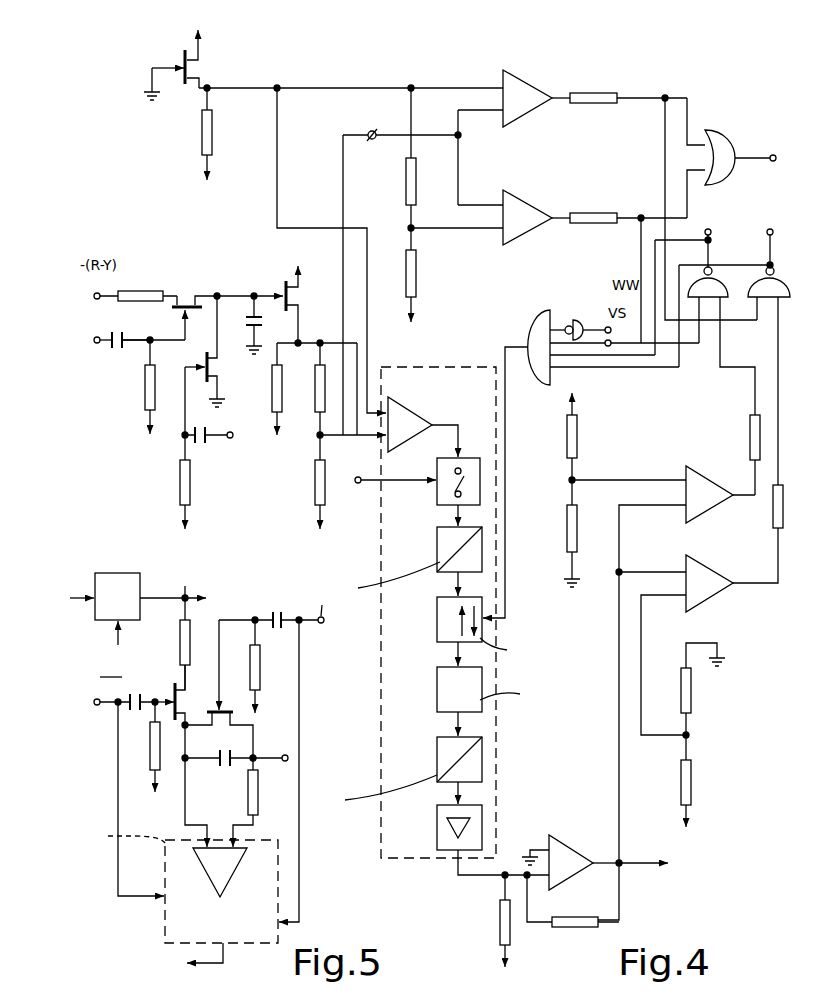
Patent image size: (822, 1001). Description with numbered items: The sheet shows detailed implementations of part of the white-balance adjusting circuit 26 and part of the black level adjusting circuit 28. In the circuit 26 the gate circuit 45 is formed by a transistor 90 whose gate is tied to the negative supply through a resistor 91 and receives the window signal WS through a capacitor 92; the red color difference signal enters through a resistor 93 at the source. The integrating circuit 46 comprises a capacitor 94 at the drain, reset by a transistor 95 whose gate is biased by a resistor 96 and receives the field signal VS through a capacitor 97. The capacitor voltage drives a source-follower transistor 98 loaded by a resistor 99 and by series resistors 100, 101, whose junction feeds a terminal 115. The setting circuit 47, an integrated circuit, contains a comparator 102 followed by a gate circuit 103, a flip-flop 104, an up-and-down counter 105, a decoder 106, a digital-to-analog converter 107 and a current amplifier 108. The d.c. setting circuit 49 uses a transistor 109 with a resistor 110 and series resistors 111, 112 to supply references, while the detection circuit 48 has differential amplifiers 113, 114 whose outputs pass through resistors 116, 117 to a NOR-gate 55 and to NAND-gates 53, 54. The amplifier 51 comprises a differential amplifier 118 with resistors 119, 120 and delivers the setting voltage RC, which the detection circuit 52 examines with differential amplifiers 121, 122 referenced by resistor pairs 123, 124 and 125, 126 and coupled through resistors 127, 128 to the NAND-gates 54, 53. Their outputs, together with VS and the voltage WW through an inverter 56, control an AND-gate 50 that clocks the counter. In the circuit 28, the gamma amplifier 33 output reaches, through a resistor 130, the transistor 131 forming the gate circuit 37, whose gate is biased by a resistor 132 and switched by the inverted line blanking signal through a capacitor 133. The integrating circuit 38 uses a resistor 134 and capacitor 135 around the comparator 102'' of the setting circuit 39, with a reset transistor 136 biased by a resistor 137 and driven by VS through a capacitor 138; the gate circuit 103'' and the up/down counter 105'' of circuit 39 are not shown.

In FIG. 4, the white-balance adjusting circuit 26 is at (575, 755).
In FIG. 4, the automatic black level adjusting circuit 28 is at (710, 867).
In FIG. 5, the gamma amplifier 33 is at (128, 572).
In FIG. 5, the gate circuit 37 is at (166, 671).
In FIG. 5, the integrating circuit 38 is at (234, 809).
In FIG. 5, the setting circuit 39 is at (165, 876).
In FIG. 4, the gate circuit 45 is at (157, 334).
In FIG. 4, the integrating circuit 46 is at (263, 380).
In FIG. 4, the setting circuit 47 is at (450, 366).
In FIG. 4, the detection circuit 48 is at (589, 150).
In FIG. 4, the d.c. setting circuit 49 is at (299, 175).
In FIG. 4, the AND-gate 50 is at (531, 311).
In FIG. 4, the amplifier 51 is at (583, 955).
In FIG. 4, the detection circuit 52 is at (636, 625).
In FIG. 4, the NAND-gate 53 is at (765, 266).
In FIG. 4, the NAND-gate 54 is at (701, 266).
In FIG. 4, the NOR-gate 55 is at (722, 137).
In FIG. 4, the inverter 56 is at (577, 318).
In FIG. 4, the transistor 90 is at (184, 303).
In FIG. 4, the resistor 91 is at (145, 395).
In FIG. 4, the capacitor 92 is at (132, 349).
In FIG. 4, the resistor 93 is at (117, 303).
In FIG. 4, the capacitor 94 is at (272, 325).
In FIG. 4, the transistor 95 is at (209, 383).
In FIG. 4, the resistor 96 is at (180, 472).
In FIG. 4, the capacitor 97 is at (205, 448).
In FIG. 4, the transistor 98 is at (283, 292).
In FIG. 4, the resistor 99 is at (272, 410).
In FIG. 4, the resistor 100 is at (314, 406).
In FIG. 4, the resistor 101 is at (314, 497).
In FIG. 4, the comparator 102 is at (423, 415).
In FIG. 4, the gate circuit 103 is at (406, 484).
In FIG. 4, the flip-flop 104 is at (437, 552).
In FIG. 4, the up-and-down counter 105 is at (480, 631).
In FIG. 4, the decoder 106 is at (437, 690).
In FIG. 4, the digital-to-analog converter 107 is at (437, 760).
In FIG. 4, the current amplifier 108 is at (437, 823).
In FIG. 4, the transistor 109 is at (181, 86).
In FIG. 4, the resistor 110 is at (212, 140).
In FIG. 4, the resistor 111 is at (405, 182).
In FIG. 4, the resistor 112 is at (417, 286).
In FIG. 4, the differential amplifier 113 is at (527, 80).
In FIG. 4, the differential amplifier 114 is at (520, 196).
In FIG. 4, the terminal 115 is at (371, 130).
In FIG. 4, the resistor 116 is at (593, 92).
In FIG. 4, the resistor 117 is at (620, 212).
In FIG. 4, the differential amplifier 118 is at (573, 840).
In FIG. 4, the resistor 119 is at (500, 925).
In FIG. 4, the resistor 120 is at (580, 916).
In FIG. 4, the differential amplifier 121 is at (714, 476).
In FIG. 4, the differential amplifier 122 is at (714, 564).
In FIG. 4, the resistor 123 is at (567, 448).
In FIG. 4, the resistor 124 is at (567, 538).
In FIG. 4, the resistor 125 is at (692, 692).
In FIG. 4, the resistor 126 is at (692, 782).
In FIG. 4, the resistor 127 is at (749, 426).
In FIG. 4, the resistor 128 is at (772, 511).
In FIG. 5, the resistor 130 is at (180, 645).
In FIG. 5, the transistor 131 is at (174, 684).
In FIG. 5, the resistor 132 is at (150, 748).
In FIG. 5, the capacitor 133 is at (132, 712).
In FIG. 5, the resistor 134 is at (258, 790).
In FIG. 5, the capacitor 135 is at (229, 767).
In FIG. 5, the transistor 136 is at (235, 716).
In FIG. 5, the resistor 137 is at (258, 665).
In FIG. 5, the capacitor 138 is at (275, 612).
In FIG. 5, the comparator 102'' is at (244, 883).
In FIG. 5, the gate circuit 103'' is at (142, 817).
In FIG. 5, the up/down counter 105'' is at (267, 793).